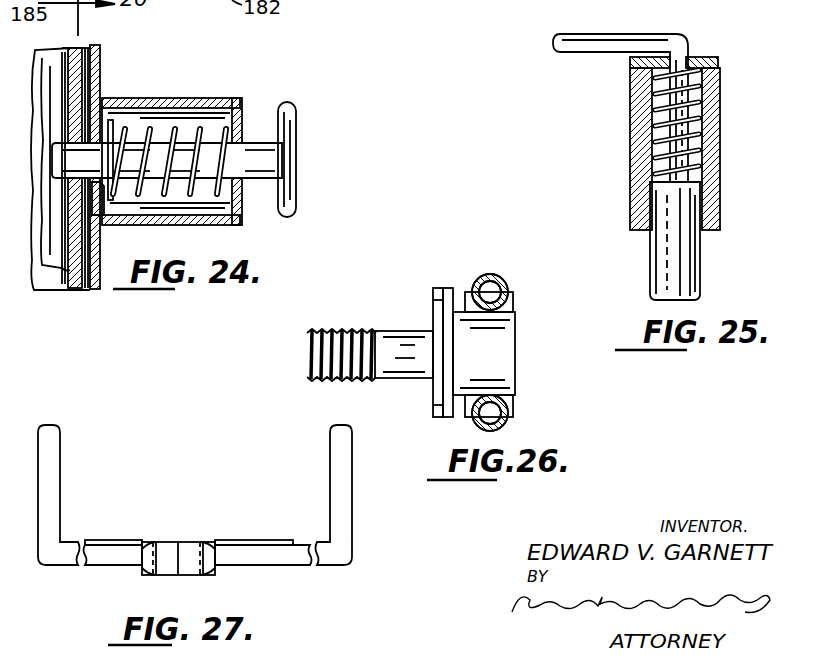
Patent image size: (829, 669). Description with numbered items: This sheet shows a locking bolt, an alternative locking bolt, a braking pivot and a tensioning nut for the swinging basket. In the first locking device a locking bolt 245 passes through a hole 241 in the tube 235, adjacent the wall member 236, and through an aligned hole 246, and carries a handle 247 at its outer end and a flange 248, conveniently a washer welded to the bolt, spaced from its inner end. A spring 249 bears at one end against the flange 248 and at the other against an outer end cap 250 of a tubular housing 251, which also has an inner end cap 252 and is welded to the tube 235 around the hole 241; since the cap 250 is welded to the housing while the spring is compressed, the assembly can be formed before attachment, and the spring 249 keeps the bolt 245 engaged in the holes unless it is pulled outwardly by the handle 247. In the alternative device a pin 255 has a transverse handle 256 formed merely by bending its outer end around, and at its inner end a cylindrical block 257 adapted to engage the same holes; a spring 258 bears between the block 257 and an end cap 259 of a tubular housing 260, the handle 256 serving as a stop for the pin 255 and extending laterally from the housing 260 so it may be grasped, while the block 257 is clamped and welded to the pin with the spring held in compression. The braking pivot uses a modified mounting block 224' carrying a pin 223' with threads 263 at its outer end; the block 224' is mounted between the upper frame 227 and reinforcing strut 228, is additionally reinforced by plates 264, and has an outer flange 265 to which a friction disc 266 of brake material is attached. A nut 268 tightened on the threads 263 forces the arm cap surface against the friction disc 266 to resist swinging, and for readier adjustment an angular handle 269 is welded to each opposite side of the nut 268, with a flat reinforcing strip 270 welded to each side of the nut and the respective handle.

In FIG. 24, the tube 235 is at (96, 76).
In FIG. 24, the wall panel 236 is at (80, 57).
In FIG. 24, the hole 241 is at (95, 214).
In FIG. 24, the locking bolt 245 is at (224, 150).
In FIG. 24, the hole 246 is at (77, 182).
In FIG. 24, the handle 247 is at (293, 108).
In FIG. 24, the flange 248 is at (115, 125).
In FIG. 24, the spring 249 is at (230, 140).
In FIG. 24, the outer end cap 250 is at (241, 204).
In FIG. 24, the tubular housing 251 is at (210, 100).
In FIG. 24, the inner end cap 252 is at (110, 207).
In FIG. 25, the pin 255 is at (680, 50).
In FIG. 25, the transverse handle 256 is at (600, 35).
In FIG. 25, the cylindrical block 257 is at (692, 258).
In FIG. 25, the spring 258 is at (690, 92).
In FIG. 25, the end cap 259 is at (713, 60).
In FIG. 25, the tubular housing 260 is at (718, 132).
In FIG. 26, the threads 263 is at (366, 327).
In FIG. 26, the pin 223' is at (404, 371).
In FIG. 26, the mounting block 224' is at (512, 353).
In FIG. 26, the upper frame 227 is at (509, 421).
In FIG. 26, the reinforcing strut 228 is at (496, 282).
In FIG. 26, the plates 264 is at (514, 302).
In FIG. 26, the outer flange 265 is at (448, 290).
In FIG. 26, the friction disc 266 is at (438, 290).
In FIG. 27, the nut 268 is at (188, 568).
In FIG. 27, the angular handle 269 is at (52, 500).
In FIG. 27, the flat reinforcing strip 270 is at (110, 541).